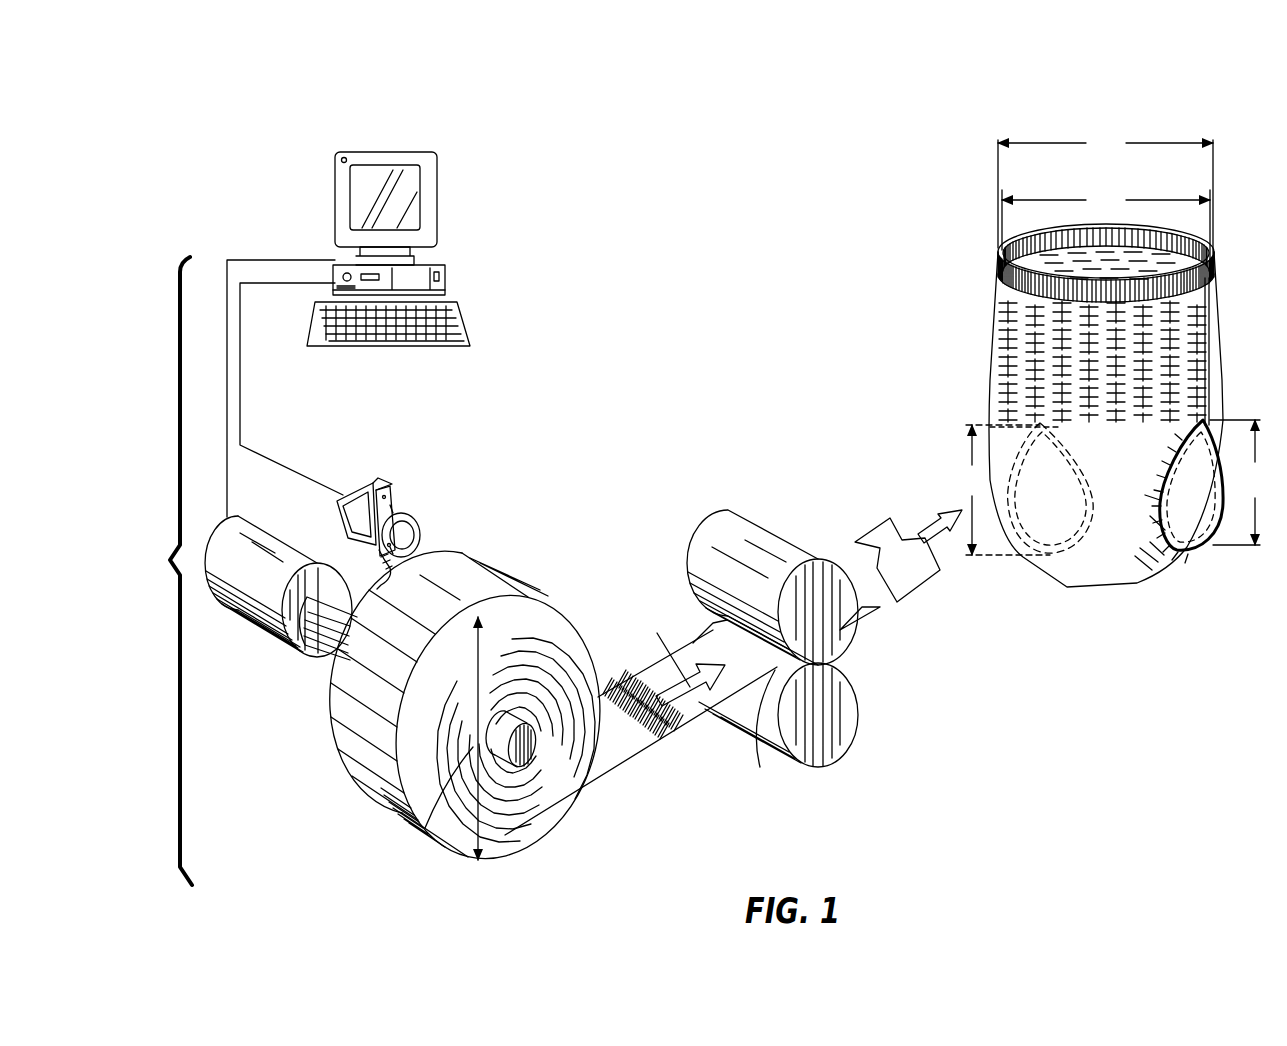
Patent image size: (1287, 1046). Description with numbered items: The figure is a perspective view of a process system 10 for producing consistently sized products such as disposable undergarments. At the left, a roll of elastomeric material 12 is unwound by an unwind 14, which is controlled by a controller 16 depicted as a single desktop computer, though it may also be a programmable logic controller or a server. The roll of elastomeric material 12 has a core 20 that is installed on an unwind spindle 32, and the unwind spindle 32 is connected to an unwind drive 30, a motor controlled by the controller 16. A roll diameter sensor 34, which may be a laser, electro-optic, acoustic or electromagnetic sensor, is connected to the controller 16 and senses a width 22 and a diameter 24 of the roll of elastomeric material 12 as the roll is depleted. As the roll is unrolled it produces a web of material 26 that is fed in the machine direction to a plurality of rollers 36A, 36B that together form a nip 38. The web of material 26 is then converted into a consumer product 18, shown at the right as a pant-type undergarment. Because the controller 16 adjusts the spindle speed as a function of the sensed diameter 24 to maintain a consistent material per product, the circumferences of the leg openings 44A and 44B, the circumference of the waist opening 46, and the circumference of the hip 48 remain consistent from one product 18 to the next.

The process system 10 is at (627, 417).
The roll of elastomeric material 12 is at (328, 724).
The unwind 14 is at (246, 649).
The controller 16 is at (437, 178).
The consumer product 18 is at (986, 305).
The core 20 is at (508, 717).
The width 22 is at (452, 640).
The diameter 24 is at (425, 828).
The web of material 26 is at (603, 755).
The unwind drive 30 is at (240, 518).
The unwind spindle 32 is at (318, 662).
The roll diameter sensor 34 is at (378, 486).
The roller 36A is at (840, 627).
The roller 36B is at (842, 707).
The nip 38 is at (762, 765).
The leg opening 44A is at (1002, 490).
The leg opening 44B is at (1243, 482).
The waist opening 46 is at (1106, 224).
The hip 48 is at (1105, 196).